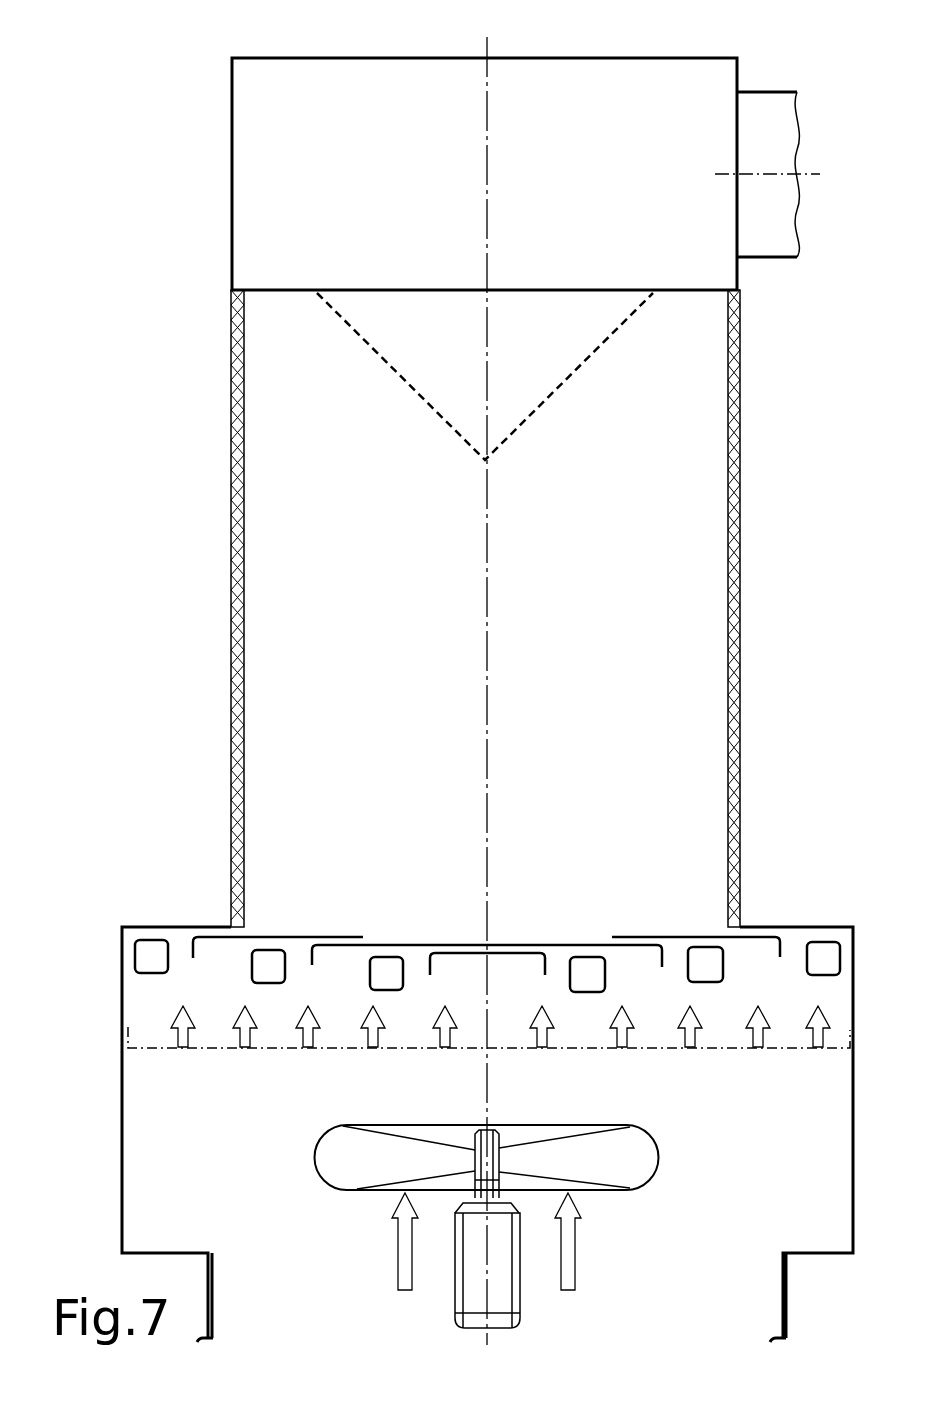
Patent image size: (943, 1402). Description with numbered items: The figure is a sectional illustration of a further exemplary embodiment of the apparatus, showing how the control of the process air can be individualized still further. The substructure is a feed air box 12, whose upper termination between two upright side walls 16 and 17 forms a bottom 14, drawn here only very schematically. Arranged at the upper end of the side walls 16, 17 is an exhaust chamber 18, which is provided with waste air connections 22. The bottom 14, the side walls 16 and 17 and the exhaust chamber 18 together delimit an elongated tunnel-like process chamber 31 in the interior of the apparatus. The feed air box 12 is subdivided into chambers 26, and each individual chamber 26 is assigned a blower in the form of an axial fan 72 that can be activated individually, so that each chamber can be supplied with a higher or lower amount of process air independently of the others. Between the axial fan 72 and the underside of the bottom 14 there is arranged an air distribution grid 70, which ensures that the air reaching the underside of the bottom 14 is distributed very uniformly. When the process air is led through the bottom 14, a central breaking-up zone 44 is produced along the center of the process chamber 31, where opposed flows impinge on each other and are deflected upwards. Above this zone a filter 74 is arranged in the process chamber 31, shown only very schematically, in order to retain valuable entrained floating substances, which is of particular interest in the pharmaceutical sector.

The feed air box 12 is at (122, 1092).
The bottom 14 is at (625, 927).
The side wall 16 is at (231, 552).
The side wall 17 is at (740, 438).
The exhaust chamber 18 is at (732, 57).
The waste air connection 22 is at (766, 258).
The chamber 26 is at (213, 1115).
The process chamber 31 is at (623, 579).
The central breaking-up zone 44 is at (492, 935).
The air distribution grid 70 is at (777, 1050).
The axial fan 72 is at (637, 1160).
The filter 74 is at (568, 377).